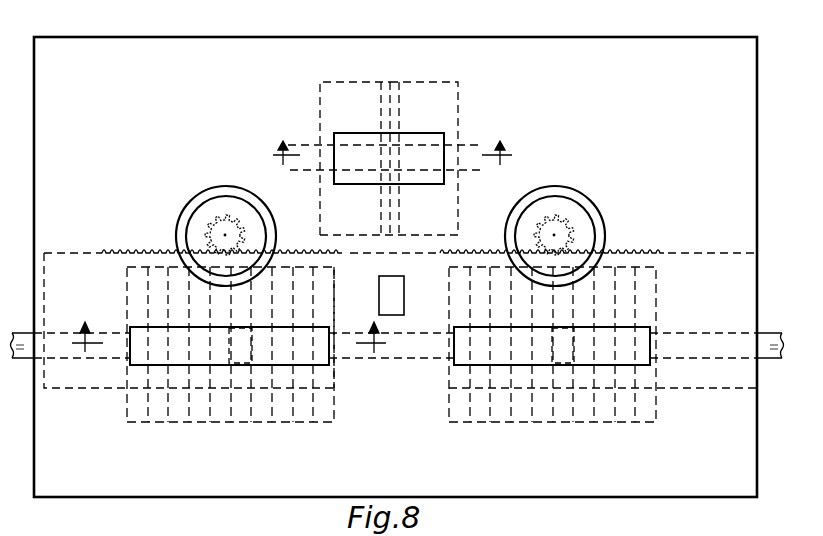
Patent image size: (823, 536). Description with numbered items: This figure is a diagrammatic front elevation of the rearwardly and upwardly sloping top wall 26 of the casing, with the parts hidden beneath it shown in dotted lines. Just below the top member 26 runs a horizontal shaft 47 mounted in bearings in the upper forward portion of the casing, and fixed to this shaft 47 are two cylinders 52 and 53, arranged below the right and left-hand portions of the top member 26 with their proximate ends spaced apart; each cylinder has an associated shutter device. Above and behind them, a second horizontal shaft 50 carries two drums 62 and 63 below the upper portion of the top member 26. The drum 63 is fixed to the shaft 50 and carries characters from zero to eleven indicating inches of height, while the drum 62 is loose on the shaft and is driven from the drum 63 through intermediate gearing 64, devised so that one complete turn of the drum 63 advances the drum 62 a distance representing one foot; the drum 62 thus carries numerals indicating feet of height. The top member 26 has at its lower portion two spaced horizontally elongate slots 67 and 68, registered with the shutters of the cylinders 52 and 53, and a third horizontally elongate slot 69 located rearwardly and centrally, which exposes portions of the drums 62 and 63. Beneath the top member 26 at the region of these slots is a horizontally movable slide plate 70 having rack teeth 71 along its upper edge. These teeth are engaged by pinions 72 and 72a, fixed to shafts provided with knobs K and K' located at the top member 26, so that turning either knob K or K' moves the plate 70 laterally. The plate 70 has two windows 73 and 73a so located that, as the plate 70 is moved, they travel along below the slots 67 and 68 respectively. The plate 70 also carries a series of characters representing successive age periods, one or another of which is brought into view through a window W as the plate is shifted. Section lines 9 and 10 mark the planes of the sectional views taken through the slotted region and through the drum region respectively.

The top wall 26 is at (722, 50).
The horizontal shaft 47 is at (705, 345).
The horizontal shaft 50 is at (330, 148).
The cylinder 52 is at (222, 428).
The cylinder 53 is at (598, 428).
The drum 62 is at (336, 88).
The drum 63 is at (428, 88).
The intermediate gearing 64 is at (390, 76).
The horizontally elongate slot 67 is at (144, 330).
The horizontally elongate slot 68 is at (640, 333).
The horizontally elongate slot 69 is at (440, 137).
The slide plate 70 is at (64, 263).
The rack teeth 71 is at (622, 253).
The pinion 72 is at (248, 226).
The pinion 72a is at (578, 231).
The window 73 is at (242, 370).
The window 73a is at (565, 368).
The section line 9- 9 is at (228, 339).
The section line 10- 10 is at (397, 153).
The knob K is at (216, 227).
The knob K' is at (556, 226).
The window W is at (404, 295).